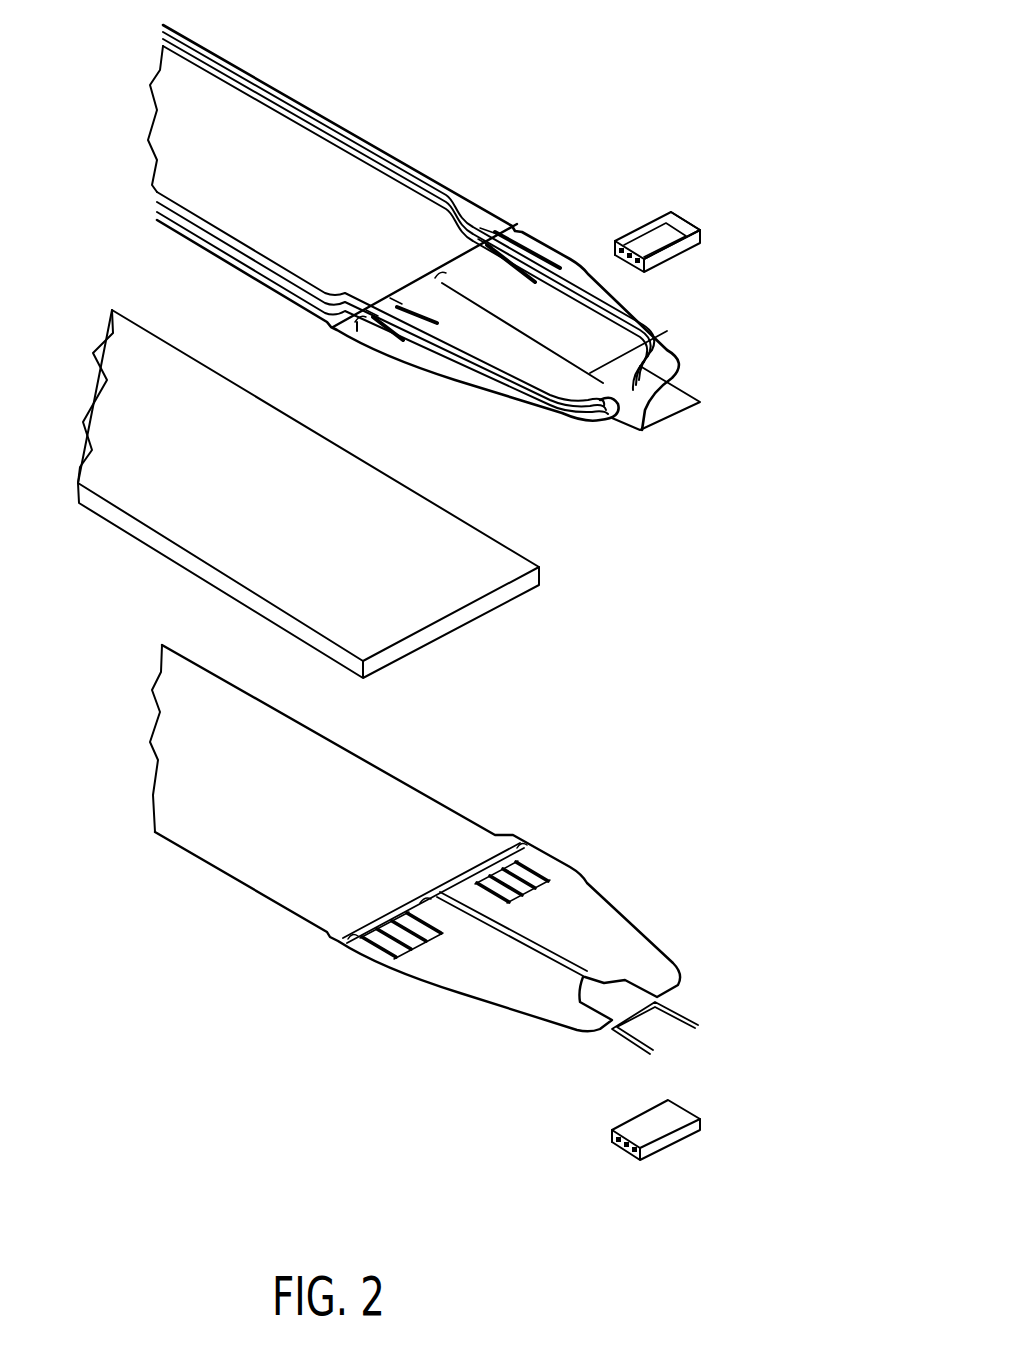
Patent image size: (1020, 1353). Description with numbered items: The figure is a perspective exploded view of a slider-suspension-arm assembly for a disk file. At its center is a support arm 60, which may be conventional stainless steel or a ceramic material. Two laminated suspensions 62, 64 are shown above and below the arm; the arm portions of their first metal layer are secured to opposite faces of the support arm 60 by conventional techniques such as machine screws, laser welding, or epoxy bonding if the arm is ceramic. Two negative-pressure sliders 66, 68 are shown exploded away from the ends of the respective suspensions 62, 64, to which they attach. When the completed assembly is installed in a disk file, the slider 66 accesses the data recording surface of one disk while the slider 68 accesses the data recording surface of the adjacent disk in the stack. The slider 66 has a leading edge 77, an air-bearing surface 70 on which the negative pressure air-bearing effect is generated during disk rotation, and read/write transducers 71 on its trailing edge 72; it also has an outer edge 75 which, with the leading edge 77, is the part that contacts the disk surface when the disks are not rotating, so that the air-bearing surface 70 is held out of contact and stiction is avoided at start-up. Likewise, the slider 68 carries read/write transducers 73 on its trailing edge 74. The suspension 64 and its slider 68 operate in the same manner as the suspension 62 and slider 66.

The support arm 60 is at (442, 568).
The laminated suspension 62 is at (343, 123).
The laminated suspension 64 is at (243, 895).
The negative-pressure slider 66 is at (693, 239).
The negative-pressure slider 68 is at (659, 1126).
The air-bearing surface 70 is at (655, 222).
The read/write transducers 71 is at (624, 257).
The trailing edge 72 is at (613, 241).
The read/write transducers 73 is at (613, 1145).
The trailing edge 74 is at (612, 1130).
The outer edge 75 is at (677, 244).
The leading edge 77 is at (672, 213).